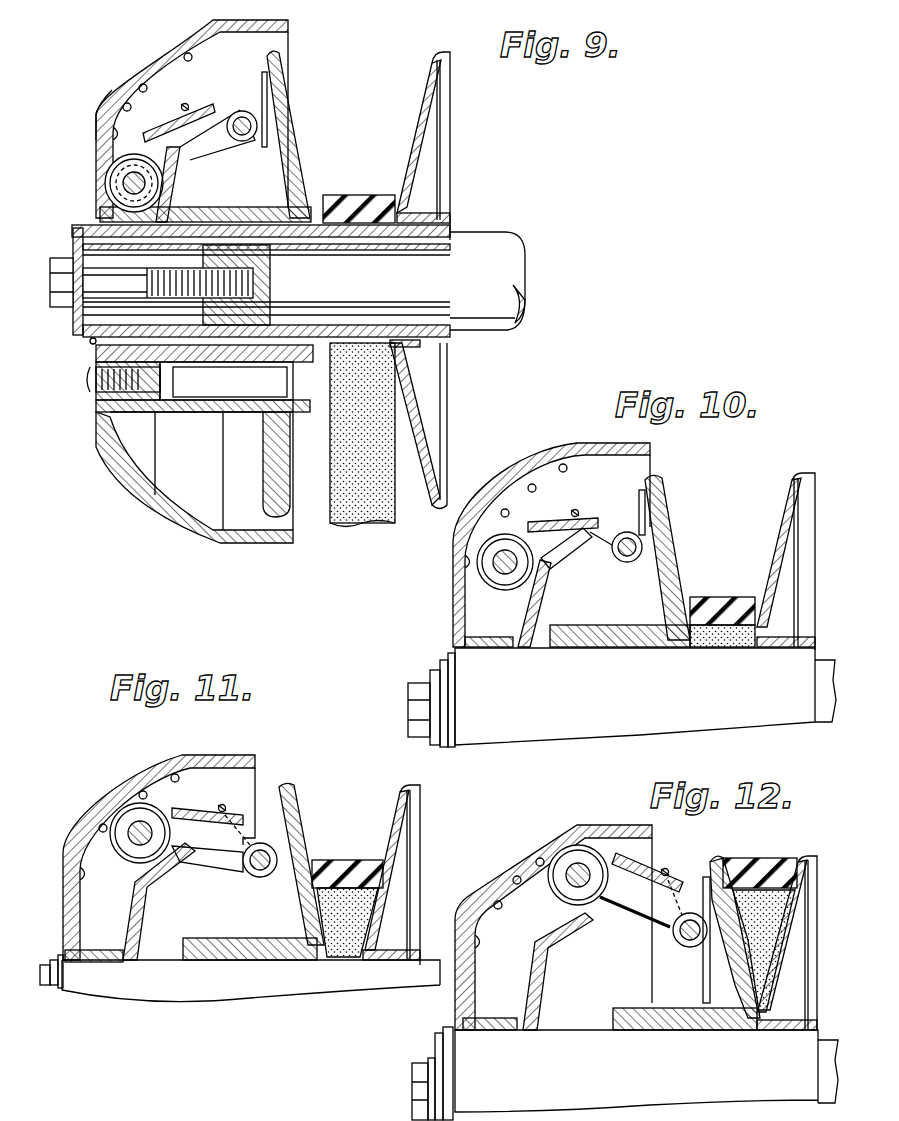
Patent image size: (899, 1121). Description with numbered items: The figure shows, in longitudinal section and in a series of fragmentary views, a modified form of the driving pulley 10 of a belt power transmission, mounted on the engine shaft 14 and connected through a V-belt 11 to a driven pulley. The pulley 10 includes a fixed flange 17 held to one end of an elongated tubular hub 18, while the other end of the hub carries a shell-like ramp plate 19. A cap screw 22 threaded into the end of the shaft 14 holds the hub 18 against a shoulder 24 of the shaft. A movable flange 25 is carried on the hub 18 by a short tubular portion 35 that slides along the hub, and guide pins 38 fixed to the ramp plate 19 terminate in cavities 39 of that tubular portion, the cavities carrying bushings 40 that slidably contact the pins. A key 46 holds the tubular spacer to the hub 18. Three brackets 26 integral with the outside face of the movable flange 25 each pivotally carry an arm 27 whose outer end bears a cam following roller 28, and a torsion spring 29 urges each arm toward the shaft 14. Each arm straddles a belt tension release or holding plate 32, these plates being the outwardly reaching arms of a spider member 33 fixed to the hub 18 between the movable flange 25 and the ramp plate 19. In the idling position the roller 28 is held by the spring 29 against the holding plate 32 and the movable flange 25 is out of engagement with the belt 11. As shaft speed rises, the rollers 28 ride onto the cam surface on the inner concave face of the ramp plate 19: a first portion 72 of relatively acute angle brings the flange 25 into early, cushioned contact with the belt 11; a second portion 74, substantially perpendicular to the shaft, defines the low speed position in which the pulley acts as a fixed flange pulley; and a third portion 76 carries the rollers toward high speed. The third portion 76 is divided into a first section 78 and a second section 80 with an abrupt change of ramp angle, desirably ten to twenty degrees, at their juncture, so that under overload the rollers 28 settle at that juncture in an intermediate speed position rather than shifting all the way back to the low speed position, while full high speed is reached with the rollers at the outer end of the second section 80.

In FIG. 9, the driving pulley 10 is at (480, 132).
In FIG. 10, the driving pulley 10 is at (772, 485).
In FIG. 11, the driving pulley 10 is at (312, 792).
In FIG. 12, the driving pulley 10 is at (408, 1050).
In FIG. 9, the V-belt 11 is at (350, 192).
In FIG. 10, the V-belt 11 is at (722, 596).
In FIG. 11, the V-belt 11 is at (342, 866).
In FIG. 12, the V-belt 11 is at (763, 858).
In FIG. 9, the shaft 14 is at (498, 262).
In FIG. 10, the shaft 14 is at (825, 715).
In FIG. 12, the shaft 14 is at (827, 1043).
In FIG. 9, the fixed flange 17 is at (418, 420).
In FIG. 10, the fixed flange 17 is at (787, 516).
In FIG. 11, the fixed flange 17 is at (398, 828).
In FIG. 12, the fixed flange 17 is at (787, 937).
In FIG. 9, the tubular hub 18 is at (445, 225).
In FIG. 10, the tubular hub 18 is at (560, 720).
In FIG. 11, the tubular hub 18 is at (165, 1000).
In FIG. 12, the tubular hub 18 is at (636, 1071).
In FIG. 9, the ramp plate 19 is at (96, 110).
In FIG. 9, the cap screw 22 is at (60, 308).
In FIG. 10, the cap screw 22 is at (408, 688).
In FIG. 11, the cap screw 22 is at (51, 971).
In FIG. 12, the cap screw 22 is at (417, 1097).
In FIG. 9, the shoulder 24 is at (448, 250).
In FIG. 9, the movable flange 25 is at (283, 125).
In FIG. 10, the movable flange 25 is at (662, 498).
In FIG. 11, the movable flange 25 is at (293, 810).
In FIG. 12, the movable flange 25 is at (718, 857).
In FIG. 9, the bracket 26 is at (250, 110).
In FIG. 10, the bracket 26 is at (635, 562).
In FIG. 11, the bracket 26 is at (260, 860).
In FIG. 12, the bracket 26 is at (712, 943).
In FIG. 9, the arm 27 is at (205, 140).
In FIG. 10, the arm 27 is at (550, 520).
In FIG. 11, the arm 27 is at (204, 823).
In FIG. 12, the arm 27 is at (622, 890).
In FIG. 9, the cam following roller 28 is at (110, 200).
In FIG. 10, the cam following roller 28 is at (497, 580).
In FIG. 11, the cam following roller 28 is at (122, 845).
In FIG. 12, the cam following roller 28 is at (590, 858).
In FIG. 9, the torsion spring 29 is at (186, 103).
In FIG. 10, the torsion spring 29 is at (578, 510).
In FIG. 11, the torsion spring 29 is at (227, 806).
In FIG. 12, the torsion spring 29 is at (666, 868).
In FIG. 9, the belt tension release plate 32 is at (180, 182).
In FIG. 10, the belt tension release plate 32 is at (538, 612).
In FIG. 11, the belt tension release plate 32 is at (145, 910).
In FIG. 12, the belt tension release plate 32 is at (540, 990).
In FIG. 9, the spider member 33 is at (165, 423).
In FIG. 9, the tubular portion 35 is at (258, 206).
In FIG. 10, the tubular portion 35 is at (626, 640).
In FIG. 11, the tubular portion 35 is at (263, 947).
In FIG. 12, the tubular portion 35 is at (682, 1030).
In FIG. 9, the guide pin 38 is at (193, 378).
In FIG. 9, the cavity 39 is at (245, 392).
In FIG. 9, the bushing 40 is at (213, 400).
In FIG. 9, the key 46 is at (90, 345).
In FIG. 9, the first portion 72 is at (100, 177).
In FIG. 10, the first portion 72 is at (465, 603).
In FIG. 11, the first portion 72 is at (72, 925).
In FIG. 12, the first portion 72 is at (463, 997).
In FIG. 9, the second portion 74 is at (110, 133).
In FIG. 10, the second portion 74 is at (482, 562).
In FIG. 11, the second portion 74 is at (90, 873).
In FIG. 12, the second portion 74 is at (482, 943).
In FIG. 9, the third portion 76 is at (124, 103).
In FIG. 10, the third portion 76 is at (532, 484).
In FIG. 11, the third portion 76 is at (142, 791).
In FIG. 12, the third portion 76 is at (516, 876).
In FIG. 9, the first section 78 is at (143, 84).
In FIG. 10, the first section 78 is at (504, 509).
In FIG. 11, the first section 78 is at (103, 824).
In FIG. 12, the first section 78 is at (497, 901).
In FIG. 9, the second section 80 is at (188, 53).
In FIG. 10, the second section 80 is at (565, 464).
In FIG. 11, the second section 80 is at (173, 774).
In FIG. 12, the second section 80 is at (540, 858).